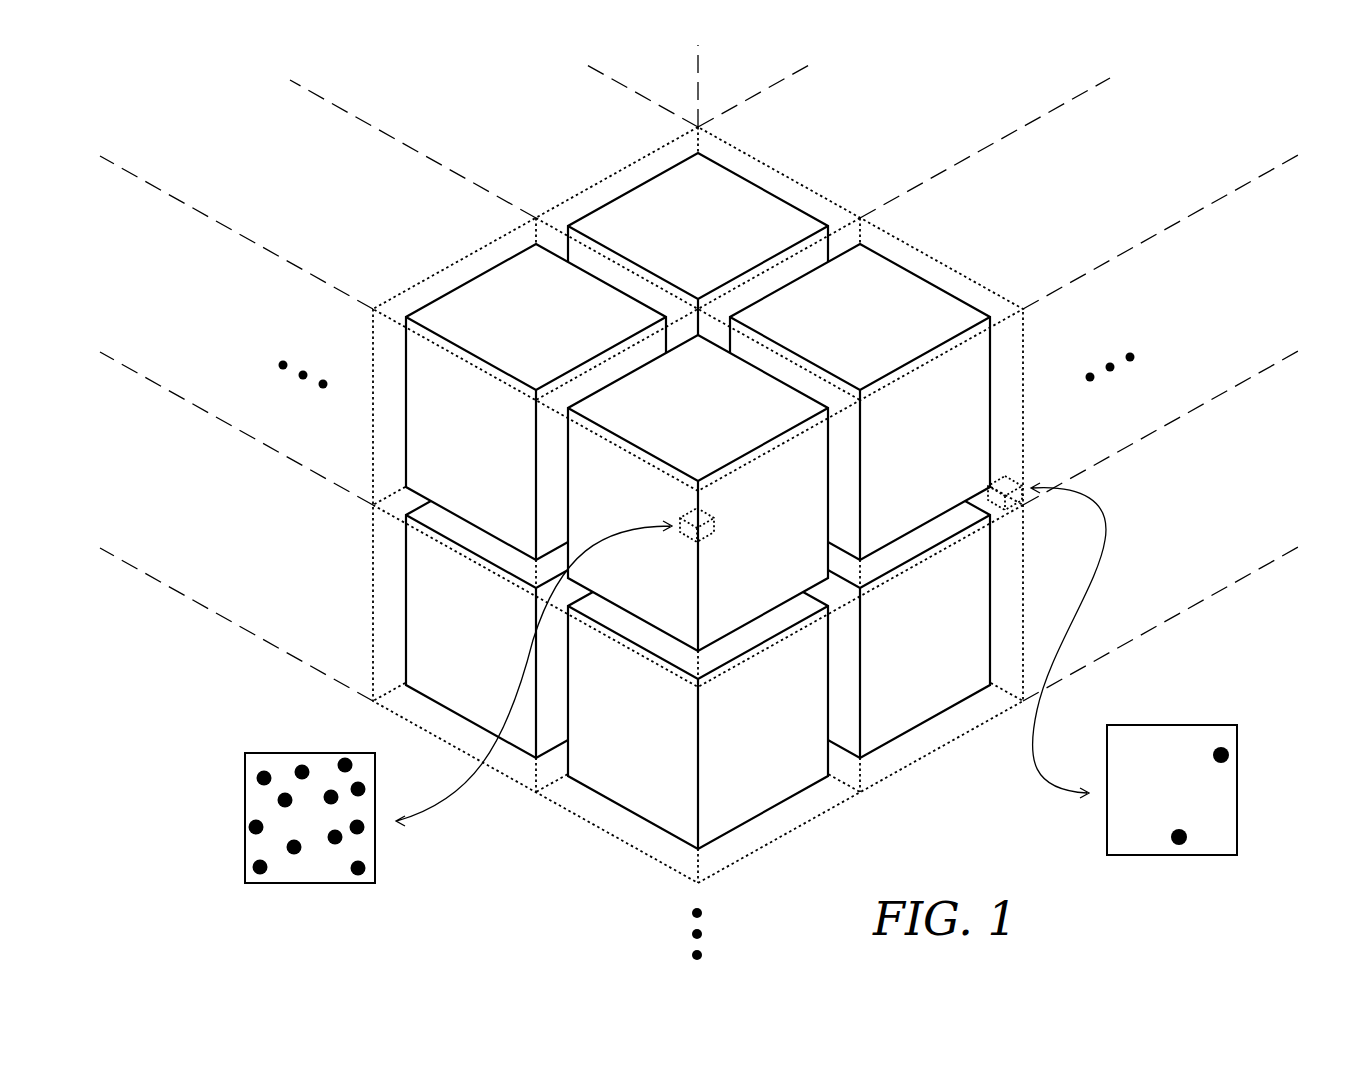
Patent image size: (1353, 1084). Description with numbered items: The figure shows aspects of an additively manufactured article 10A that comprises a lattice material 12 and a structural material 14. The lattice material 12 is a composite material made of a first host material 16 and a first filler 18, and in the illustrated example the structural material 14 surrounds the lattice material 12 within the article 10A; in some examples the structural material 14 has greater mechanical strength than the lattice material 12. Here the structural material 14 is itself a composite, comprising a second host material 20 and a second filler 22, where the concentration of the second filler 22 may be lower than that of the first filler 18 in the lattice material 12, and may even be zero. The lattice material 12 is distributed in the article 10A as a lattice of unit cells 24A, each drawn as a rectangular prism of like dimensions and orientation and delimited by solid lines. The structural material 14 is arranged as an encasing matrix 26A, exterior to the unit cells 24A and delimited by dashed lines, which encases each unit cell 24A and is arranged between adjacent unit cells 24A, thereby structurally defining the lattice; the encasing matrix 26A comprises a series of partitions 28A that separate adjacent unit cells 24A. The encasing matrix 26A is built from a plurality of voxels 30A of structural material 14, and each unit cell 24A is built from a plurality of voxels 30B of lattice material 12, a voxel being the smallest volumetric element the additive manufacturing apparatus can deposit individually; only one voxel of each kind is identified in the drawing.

The article 10A is at (323, 213).
The lattice material 12 is at (245, 822).
The structural material 14 is at (1238, 790).
The first host material 16 is at (324, 829).
The first filler 18 is at (268, 866).
The second host material 20 is at (1185, 801).
The second filler 22 is at (1212, 757).
The unit cell 24A is at (784, 718).
The encasing matrix 26A is at (843, 212).
The partition 28A is at (743, 337).
The voxel of structural material 30A is at (1005, 476).
The voxel of lattice material 30B is at (716, 525).